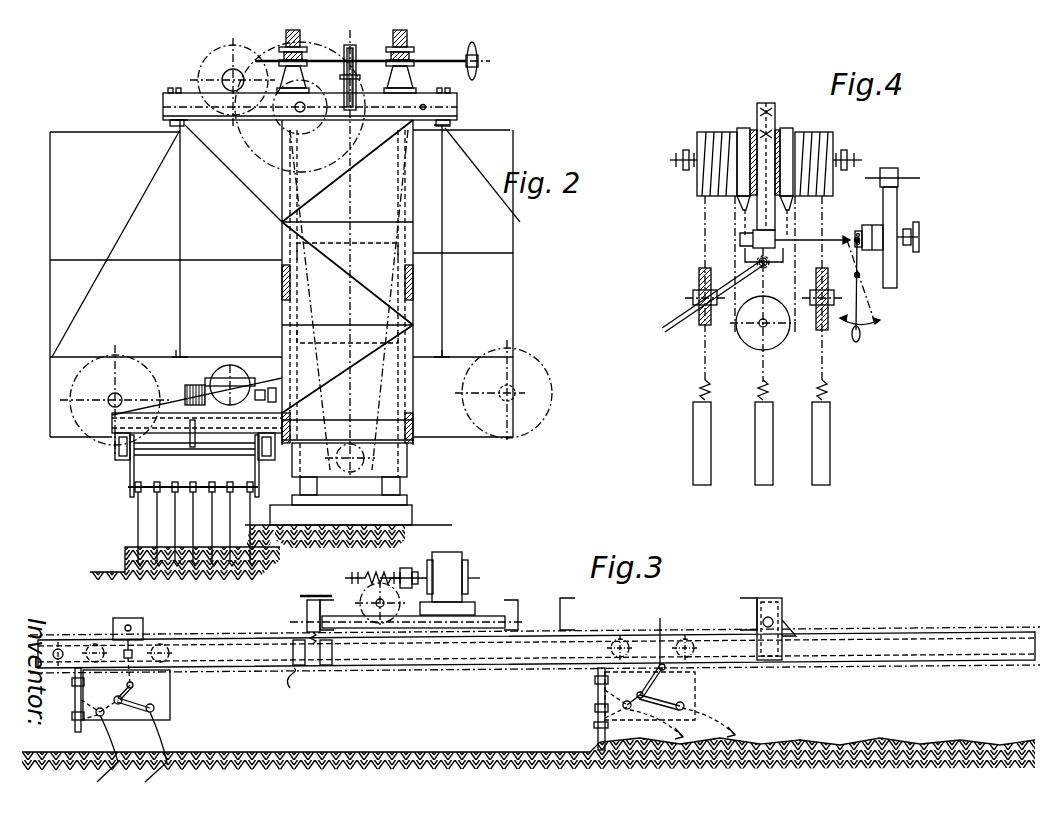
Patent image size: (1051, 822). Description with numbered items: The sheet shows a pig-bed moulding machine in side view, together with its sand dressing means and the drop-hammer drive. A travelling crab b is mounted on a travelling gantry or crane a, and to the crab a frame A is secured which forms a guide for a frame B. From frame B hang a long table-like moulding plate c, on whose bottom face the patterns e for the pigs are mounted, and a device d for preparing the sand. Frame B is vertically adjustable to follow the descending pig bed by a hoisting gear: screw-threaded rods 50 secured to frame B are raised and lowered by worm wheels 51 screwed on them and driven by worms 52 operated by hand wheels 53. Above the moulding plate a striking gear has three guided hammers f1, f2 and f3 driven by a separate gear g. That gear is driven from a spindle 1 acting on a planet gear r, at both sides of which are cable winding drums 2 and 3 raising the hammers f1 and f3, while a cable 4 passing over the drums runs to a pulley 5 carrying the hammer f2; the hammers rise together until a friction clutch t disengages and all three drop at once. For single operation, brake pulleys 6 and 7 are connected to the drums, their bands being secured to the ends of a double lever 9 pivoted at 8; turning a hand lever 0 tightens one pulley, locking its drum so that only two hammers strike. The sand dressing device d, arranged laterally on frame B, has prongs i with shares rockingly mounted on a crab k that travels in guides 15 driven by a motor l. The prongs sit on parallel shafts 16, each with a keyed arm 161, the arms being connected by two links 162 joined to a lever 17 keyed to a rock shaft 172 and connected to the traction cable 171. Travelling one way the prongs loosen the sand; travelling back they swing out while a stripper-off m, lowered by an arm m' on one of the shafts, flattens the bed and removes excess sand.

In FIG. 2, the screw-threaded rods 50 is at (408, 42).
In FIG. 2, the worm wheels 51 is at (300, 56).
In FIG. 2, the worms 52 is at (416, 62).
In FIG. 2, the hand wheels 53 is at (480, 50).
In FIG. 2, the travelling crab b is at (458, 106).
In FIG. 2, the travelling gantry or crane a is at (285, 278).
In FIG. 2, the frame A is at (413, 243).
In FIG. 2, the frame B is at (403, 397).
In FIG. 2, the motor l is at (230, 376).
In FIG. 3, the motor l is at (465, 568).
In FIG. 2, the guides 15 is at (124, 448).
In FIG. 3, the guides 15 is at (862, 643).
In FIG. 2, the parallel shafts 16 is at (191, 484).
In FIG. 3, the parallel shafts 16 is at (103, 708).
In FIG. 2, the crab k is at (210, 448).
In FIG. 3, the crab k is at (170, 690).
In FIG. 2, the device for preparing the sand d is at (175, 512).
In FIG. 3, the device for preparing the sand d is at (501, 698).
In FIG. 2, the moulding plate c is at (395, 520).
In FIG. 2, the prongs i is at (196, 582).
In FIG. 3, the prongs i is at (168, 762).
In FIG. 4, the cable winding drum 2 is at (700, 186).
In FIG. 4, the cable winding drum 3 is at (818, 140).
In FIG. 4, the brake drum or pulley 6 is at (743, 140).
In FIG. 4, the brake drum or pulley 7 is at (786, 140).
In FIG. 4, the planet gear r is at (770, 118).
In FIG. 4, the sleeve s is at (800, 140).
In FIG. 4, the gear g is at (836, 156).
In FIG. 4, the spindle 1 is at (820, 242).
In FIG. 4, the friction clutch t is at (872, 225).
In FIG. 4, the double lever 9 is at (780, 263).
In FIG. 4, the hand lever 0 is at (713, 296).
In FIG. 4, the pivot 8 is at (773, 277).
In FIG. 4, the cable 4 is at (706, 306).
In FIG. 4, the pulley 5 is at (750, 335).
In FIG. 4, the hammer f1 is at (695, 479).
In FIG. 4, the hammer f2 is at (764, 479).
In FIG. 4, the hammer f3 is at (822, 479).
In FIG. 3, the lever 17 is at (131, 684).
In FIG. 3, the rock shaft 172 is at (137, 692).
In FIG. 3, the links 162 is at (148, 707).
In FIG. 3, the arm 161 is at (158, 704).
In FIG. 3, the arm m' is at (58, 704).
In FIG. 3, the stripper-off m is at (343, 712).
In FIG. 3, the patterns e is at (375, 590).
In FIG. 3, the traction cable 171 is at (297, 691).